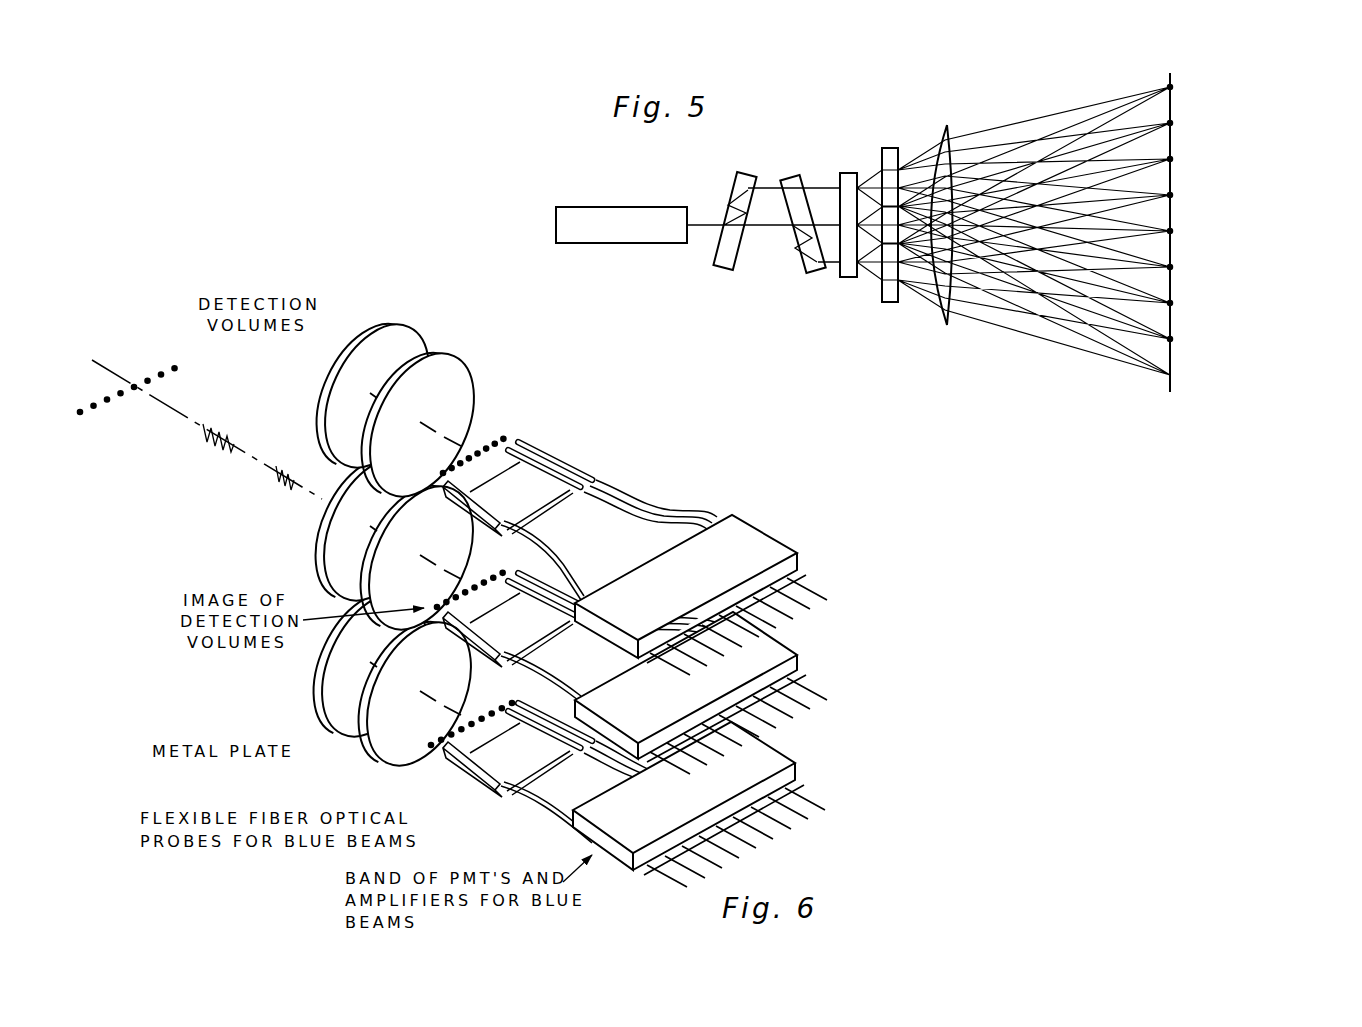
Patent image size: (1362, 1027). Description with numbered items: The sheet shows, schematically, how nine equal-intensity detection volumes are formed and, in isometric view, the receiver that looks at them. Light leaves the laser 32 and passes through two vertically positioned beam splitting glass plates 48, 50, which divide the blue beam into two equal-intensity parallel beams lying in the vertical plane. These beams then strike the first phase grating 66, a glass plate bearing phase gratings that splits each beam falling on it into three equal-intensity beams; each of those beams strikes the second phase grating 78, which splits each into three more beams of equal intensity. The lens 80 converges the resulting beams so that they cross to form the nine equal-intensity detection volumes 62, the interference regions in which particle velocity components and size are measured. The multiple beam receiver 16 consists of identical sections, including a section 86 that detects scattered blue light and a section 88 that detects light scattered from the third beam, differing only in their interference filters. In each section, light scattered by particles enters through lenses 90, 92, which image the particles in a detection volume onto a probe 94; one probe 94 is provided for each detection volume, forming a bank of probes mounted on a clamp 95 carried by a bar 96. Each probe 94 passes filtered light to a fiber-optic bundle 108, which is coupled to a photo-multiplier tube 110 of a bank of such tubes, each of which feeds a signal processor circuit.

In FIG. 5, the laser 32 is at (645, 207).
In FIG. 5, the beam splitting glass plate 48 is at (747, 176).
In FIG. 5, the beam splitting glass plate 50 is at (790, 177).
In FIG. 5, the phase grating 66 is at (852, 170).
In FIG. 5, the phase grating 78 is at (890, 305).
In FIG. 5, the lens 80 is at (945, 126).
In FIG. 5, the detection volumes 62 is at (1178, 154).
In FIG. 6, the multiple beam receiver 16 is at (182, 711).
In FIG. 6, the lens 90 is at (395, 407).
In FIG. 6, the section 86 is at (310, 568).
In FIG. 6, the section 88 is at (307, 687).
In FIG. 6, the lens 92 is at (541, 380).
In FIG. 6, the clamp 95 is at (545, 475).
In FIG. 6, the bar 96 is at (450, 511).
In FIG. 6, the probe 94 is at (663, 499).
In FIG. 6, the fiber-optic bundle 108 is at (777, 565).
In FIG. 6, the photo-multiplier tube 110 is at (808, 790).